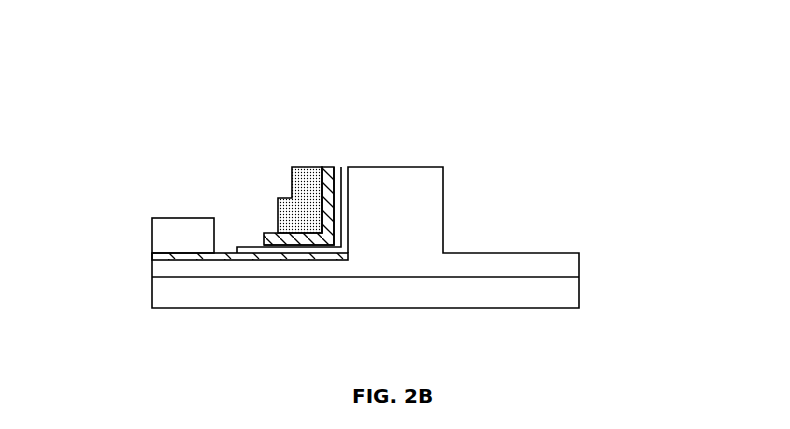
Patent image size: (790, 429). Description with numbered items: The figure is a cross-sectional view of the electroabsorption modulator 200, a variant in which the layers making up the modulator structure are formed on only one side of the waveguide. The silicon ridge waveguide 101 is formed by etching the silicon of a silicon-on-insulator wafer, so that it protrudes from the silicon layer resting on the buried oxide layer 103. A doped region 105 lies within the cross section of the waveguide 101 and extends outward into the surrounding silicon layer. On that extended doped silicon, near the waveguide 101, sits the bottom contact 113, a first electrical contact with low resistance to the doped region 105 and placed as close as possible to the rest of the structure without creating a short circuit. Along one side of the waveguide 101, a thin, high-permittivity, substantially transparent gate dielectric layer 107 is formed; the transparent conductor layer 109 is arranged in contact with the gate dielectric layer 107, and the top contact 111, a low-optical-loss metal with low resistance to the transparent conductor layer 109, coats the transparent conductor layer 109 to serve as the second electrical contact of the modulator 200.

The silicon ridge waveguide 101 is at (473, 257).
The buried oxide layer 103 is at (330, 282).
The doped region 105 is at (165, 256).
The gate dielectric layer 107 is at (337, 174).
The transparent conductor layer 109 is at (329, 198).
The top contact 111 is at (288, 217).
The bottom contact 113 is at (163, 235).
The modulator 200 is at (542, 120).